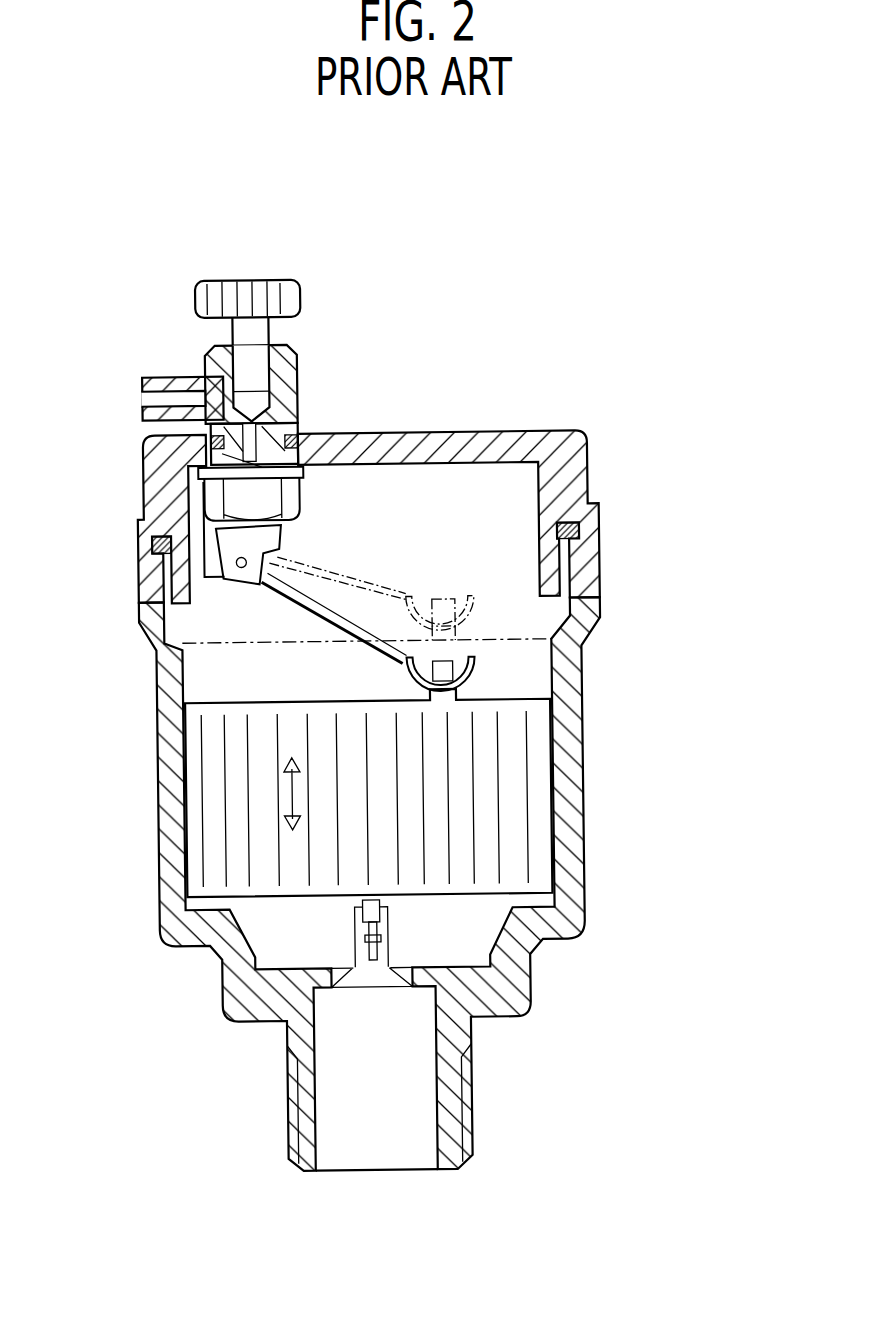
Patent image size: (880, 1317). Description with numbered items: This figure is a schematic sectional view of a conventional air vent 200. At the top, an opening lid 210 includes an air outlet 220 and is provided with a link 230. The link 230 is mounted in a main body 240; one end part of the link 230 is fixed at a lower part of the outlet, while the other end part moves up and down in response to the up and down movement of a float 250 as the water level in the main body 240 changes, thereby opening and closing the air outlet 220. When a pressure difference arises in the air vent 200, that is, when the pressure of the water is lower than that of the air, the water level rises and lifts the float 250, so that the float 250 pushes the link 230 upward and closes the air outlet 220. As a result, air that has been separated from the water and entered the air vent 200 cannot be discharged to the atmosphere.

The air vent 200 is at (370, 217).
The opening lid 210 is at (492, 435).
The air outlet 220 is at (262, 440).
The link 230 is at (325, 596).
The main body 240 is at (562, 782).
The float 250 is at (205, 774).